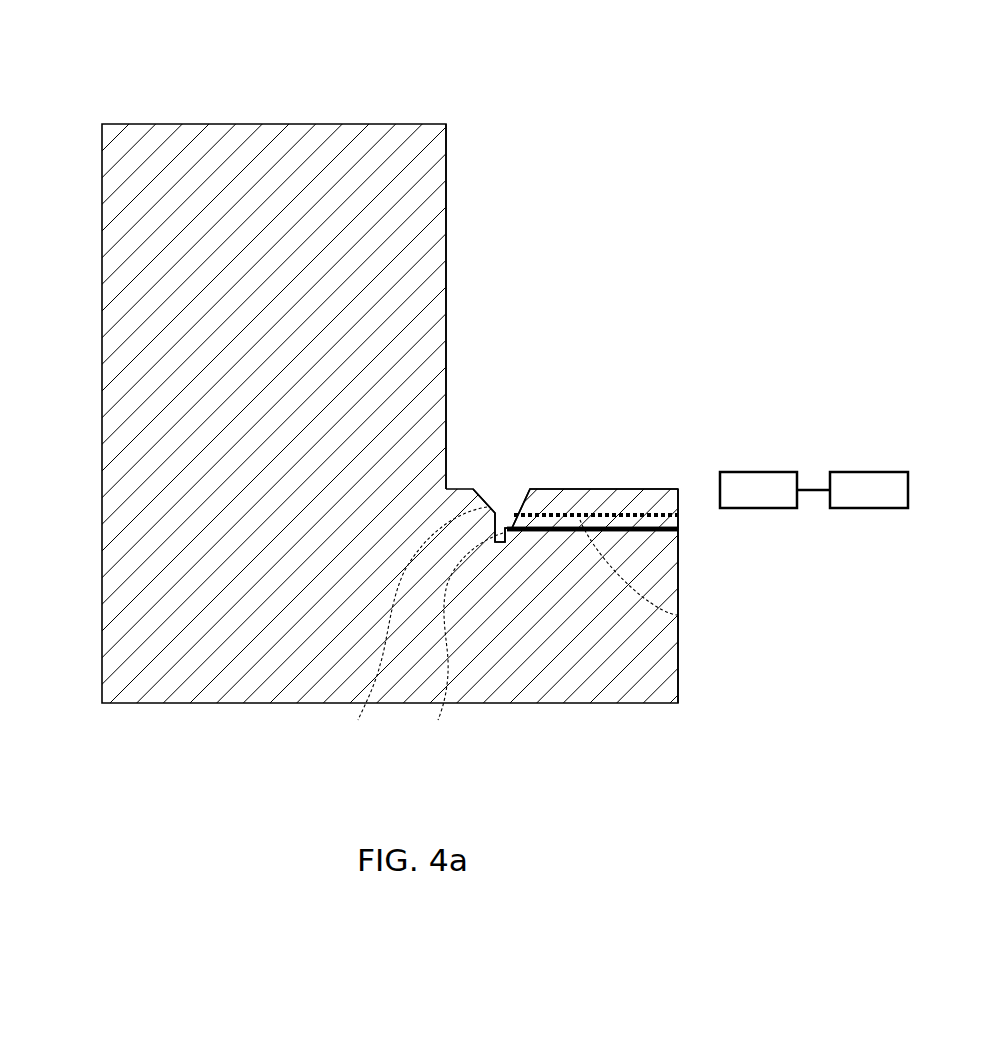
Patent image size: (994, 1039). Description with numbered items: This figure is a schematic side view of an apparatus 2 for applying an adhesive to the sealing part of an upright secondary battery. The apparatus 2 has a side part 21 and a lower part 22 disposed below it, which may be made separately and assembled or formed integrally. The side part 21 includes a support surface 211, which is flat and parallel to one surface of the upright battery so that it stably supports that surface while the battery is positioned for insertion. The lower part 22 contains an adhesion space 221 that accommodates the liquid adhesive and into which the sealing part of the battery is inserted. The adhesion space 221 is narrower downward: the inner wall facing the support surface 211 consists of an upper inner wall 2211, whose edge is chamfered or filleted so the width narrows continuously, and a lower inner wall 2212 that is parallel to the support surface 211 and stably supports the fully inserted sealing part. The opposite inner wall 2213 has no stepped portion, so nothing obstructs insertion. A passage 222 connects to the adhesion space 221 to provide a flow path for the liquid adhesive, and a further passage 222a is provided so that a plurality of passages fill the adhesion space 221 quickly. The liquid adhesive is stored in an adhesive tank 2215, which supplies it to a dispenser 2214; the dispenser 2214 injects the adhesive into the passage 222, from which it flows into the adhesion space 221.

The apparatus for applying an adhesive 2 is at (542, 62).
The side part 21 is at (121, 370).
The support surface 211 is at (447, 303).
The lower part 22 is at (499, 675).
The adhesion space 221 is at (497, 499).
The upper inner wall 2211 is at (408, 626).
The lower inner wall 2212 is at (457, 639).
The inner wall 2213 is at (678, 615).
The passage 222 is at (678, 517).
The passage 222a is at (680, 529).
The dispenser 2214 is at (680, 513).
The adhesive tank 2215 is at (895, 502).